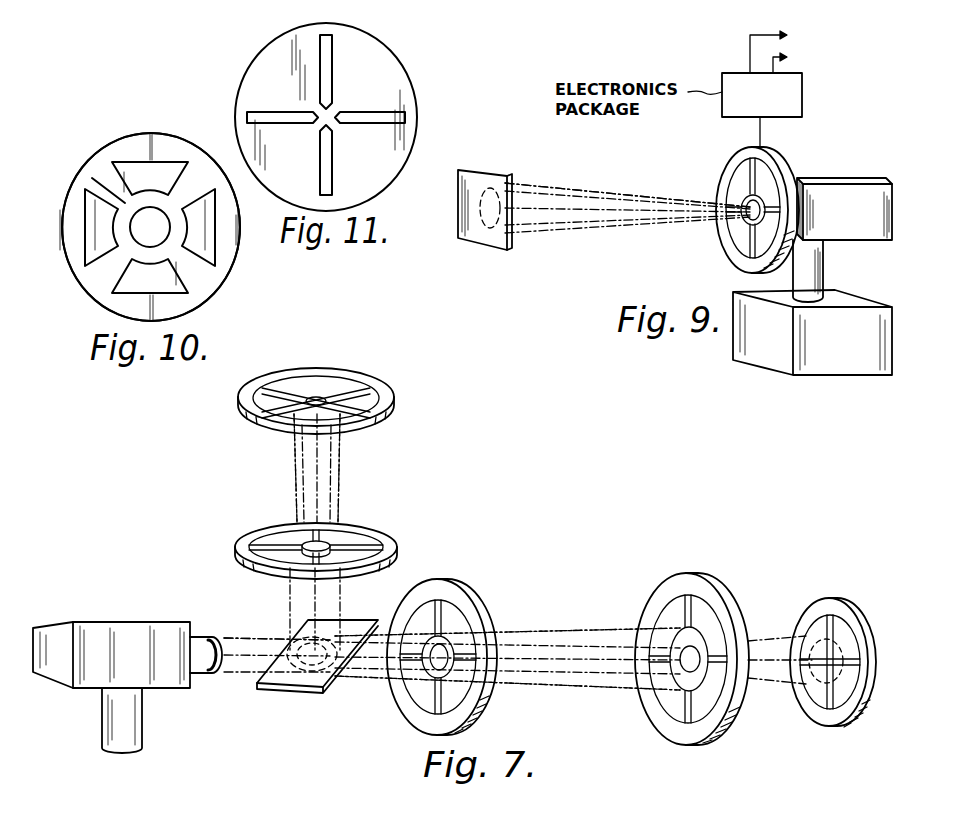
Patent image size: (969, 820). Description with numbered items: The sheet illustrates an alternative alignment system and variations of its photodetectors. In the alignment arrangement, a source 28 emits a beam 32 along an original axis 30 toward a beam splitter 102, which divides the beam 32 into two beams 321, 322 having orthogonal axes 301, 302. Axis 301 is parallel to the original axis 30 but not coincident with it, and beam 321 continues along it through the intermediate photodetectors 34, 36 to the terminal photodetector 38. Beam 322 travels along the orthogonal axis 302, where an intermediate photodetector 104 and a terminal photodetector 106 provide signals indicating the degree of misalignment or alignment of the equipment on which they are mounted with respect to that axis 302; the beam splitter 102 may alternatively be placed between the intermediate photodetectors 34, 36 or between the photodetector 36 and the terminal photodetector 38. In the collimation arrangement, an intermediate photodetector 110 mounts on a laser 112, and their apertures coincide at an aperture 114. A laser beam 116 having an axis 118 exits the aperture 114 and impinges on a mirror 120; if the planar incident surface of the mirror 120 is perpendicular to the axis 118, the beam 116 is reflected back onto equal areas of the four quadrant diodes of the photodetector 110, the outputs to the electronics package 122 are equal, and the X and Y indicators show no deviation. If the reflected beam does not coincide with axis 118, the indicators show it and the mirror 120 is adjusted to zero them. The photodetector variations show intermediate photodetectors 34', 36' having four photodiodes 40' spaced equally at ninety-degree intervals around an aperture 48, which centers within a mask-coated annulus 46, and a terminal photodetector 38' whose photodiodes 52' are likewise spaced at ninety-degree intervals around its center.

In FIG. 7, the light source / laser 28 is at (103, 620).
In FIG. 7, the original axis 30 is at (248, 658).
In FIG. 7, the beam 32 is at (250, 636).
In FIG. 7, the intermediate photodetector 34 is at (442, 642).
In FIG. 7, the intermediate photodetector 36 is at (692, 647).
In FIG. 7, the terminal photodetector 38 is at (833, 642).
In FIG. 7, the beam splitter 102 is at (287, 690).
In FIG. 7, the intermediate photodetector 104 is at (392, 552).
In FIG. 7, the terminal photodetector 106 is at (380, 404).
In FIG. 7, the axis 301 is at (548, 660).
In FIG. 7, the beam 321 is at (770, 622).
In FIG. 7, the orthogonal axis 302 is at (313, 591).
In FIG. 7, the beam 322 is at (290, 605).
In FIG. 9, the intermediate photodetector 110 is at (732, 158).
In FIG. 9, the laser 112 is at (847, 183).
In FIG. 9, the aperture 114 is at (760, 200).
In FIG. 9, the laser beam 116 is at (630, 198).
In FIG. 9, the axis 118 is at (590, 212).
In FIG. 9, the mirror 120 is at (487, 172).
In FIG. 9, the electronics package 122 is at (802, 92).
In FIG. 10, the intermediate photodetector 34' is at (134, 237).
In FIG. 10, the intermediate photodetector 36' is at (141, 237).
In FIG. 10, the photodiodes 40' is at (134, 227).
In FIG. 10, the annulus 46 is at (130, 205).
In FIG. 10, the aperture 48 is at (135, 222).
In FIG. 11, the terminal photodetector 38' is at (322, 117).
In FIG. 11, the photodiodes 52' is at (326, 115).